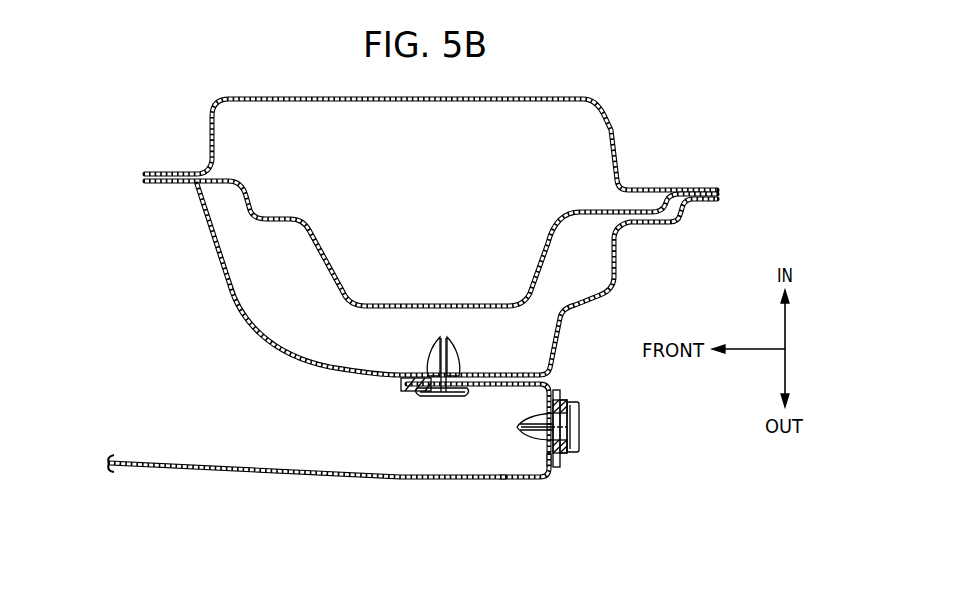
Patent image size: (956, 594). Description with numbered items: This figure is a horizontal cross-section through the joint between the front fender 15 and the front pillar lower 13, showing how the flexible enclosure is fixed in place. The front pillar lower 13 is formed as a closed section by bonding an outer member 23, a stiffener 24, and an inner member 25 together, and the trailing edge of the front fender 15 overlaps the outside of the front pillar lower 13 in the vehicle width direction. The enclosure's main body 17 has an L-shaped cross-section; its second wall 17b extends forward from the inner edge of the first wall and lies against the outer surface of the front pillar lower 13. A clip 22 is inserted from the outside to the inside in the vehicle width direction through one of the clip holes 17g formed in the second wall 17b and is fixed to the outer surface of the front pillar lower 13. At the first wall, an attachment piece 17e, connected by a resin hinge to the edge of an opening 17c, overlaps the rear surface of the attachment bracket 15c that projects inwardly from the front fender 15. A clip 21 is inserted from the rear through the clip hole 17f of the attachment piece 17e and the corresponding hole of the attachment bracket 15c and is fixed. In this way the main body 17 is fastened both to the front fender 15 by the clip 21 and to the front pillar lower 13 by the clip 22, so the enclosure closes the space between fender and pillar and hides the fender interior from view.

The front pillar lower 13 is at (179, 246).
The front fender 15 is at (216, 468).
The attachment bracket 15c is at (562, 474).
The main body 17 is at (508, 392).
The second wall 17b is at (403, 379).
The opening 17c is at (538, 446).
The attachment piece 17e is at (559, 398).
The clip hole 17f is at (576, 419).
The clip hole 17g is at (430, 357).
The clip 21 is at (582, 437).
The clip 22 is at (431, 397).
The outer member 23 is at (240, 322).
The stiffener 24 is at (290, 215).
The inner member 25 is at (267, 97).